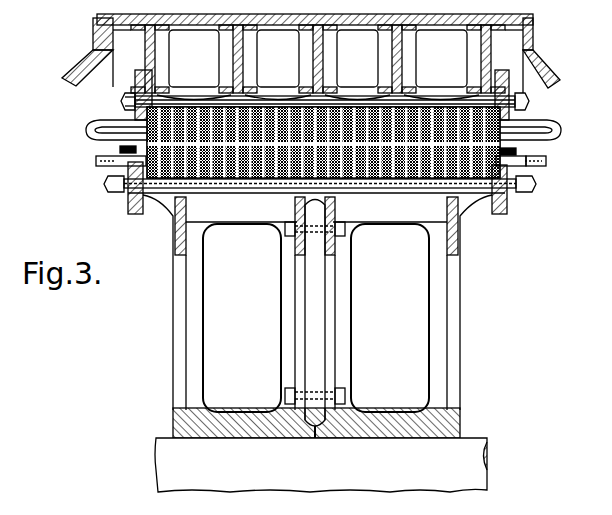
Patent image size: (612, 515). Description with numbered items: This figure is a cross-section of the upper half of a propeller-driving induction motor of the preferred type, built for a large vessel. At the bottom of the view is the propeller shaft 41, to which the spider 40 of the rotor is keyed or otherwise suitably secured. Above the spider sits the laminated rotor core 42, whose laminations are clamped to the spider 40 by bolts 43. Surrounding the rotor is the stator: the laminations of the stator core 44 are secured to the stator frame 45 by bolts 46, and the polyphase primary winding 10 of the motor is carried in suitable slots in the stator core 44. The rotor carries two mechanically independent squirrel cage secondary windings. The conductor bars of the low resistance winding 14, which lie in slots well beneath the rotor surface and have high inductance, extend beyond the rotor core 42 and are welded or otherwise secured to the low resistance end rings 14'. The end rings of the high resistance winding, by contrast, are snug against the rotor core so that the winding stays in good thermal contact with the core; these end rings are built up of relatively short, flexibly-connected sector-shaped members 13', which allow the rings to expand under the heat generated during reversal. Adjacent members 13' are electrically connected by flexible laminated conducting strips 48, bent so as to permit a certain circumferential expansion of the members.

The polyphase primary winding 10 is at (86, 131).
The sector-shaped members 13' is at (538, 136).
The low resistance winding 14 is at (110, 171).
The low resistance end rings 14' is at (538, 180).
The spider 40 is at (290, 322).
The propeller shaft 41 is at (166, 442).
The rotor core 42 is at (474, 188).
The bolts 43 is at (392, 188).
The stator core 44 is at (140, 126).
The stator frame 45 is at (363, 26).
The bolts 46 is at (290, 104).
The flexible laminated conducting strips 48 is at (540, 160).